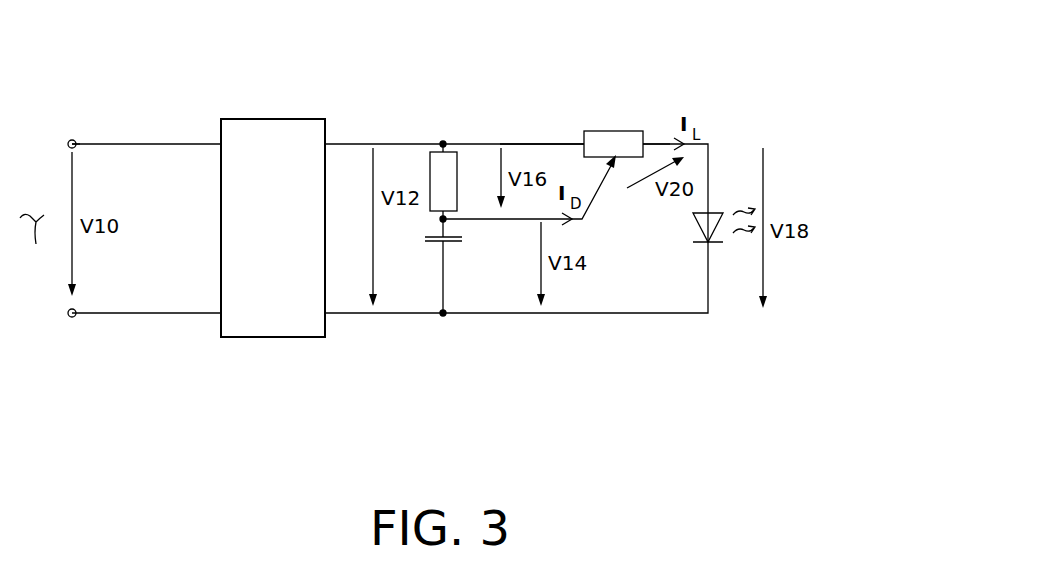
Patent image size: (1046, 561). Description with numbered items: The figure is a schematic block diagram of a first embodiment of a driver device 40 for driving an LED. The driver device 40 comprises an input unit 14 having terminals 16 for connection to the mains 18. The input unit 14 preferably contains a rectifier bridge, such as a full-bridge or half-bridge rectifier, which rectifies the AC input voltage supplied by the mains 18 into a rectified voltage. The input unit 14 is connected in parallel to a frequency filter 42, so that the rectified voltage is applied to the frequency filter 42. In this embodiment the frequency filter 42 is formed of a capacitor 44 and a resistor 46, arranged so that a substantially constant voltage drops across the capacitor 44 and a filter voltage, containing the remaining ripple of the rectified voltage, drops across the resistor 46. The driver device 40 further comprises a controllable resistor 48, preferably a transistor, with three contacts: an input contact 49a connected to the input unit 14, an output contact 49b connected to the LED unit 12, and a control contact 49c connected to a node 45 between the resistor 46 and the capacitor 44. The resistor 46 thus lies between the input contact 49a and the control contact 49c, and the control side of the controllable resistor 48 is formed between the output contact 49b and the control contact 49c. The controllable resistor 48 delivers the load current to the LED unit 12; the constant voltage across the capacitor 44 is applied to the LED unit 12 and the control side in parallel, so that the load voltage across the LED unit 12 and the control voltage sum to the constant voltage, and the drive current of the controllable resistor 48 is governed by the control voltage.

The driver device 40 is at (782, 40).
The LED unit 12 is at (796, 184).
The input unit 14 is at (289, 356).
The terminals 16 is at (73, 139).
The mains 18 is at (35, 246).
The frequency filter 42 is at (434, 126).
The capacitor 44 is at (453, 244).
The node 45 is at (441, 221).
The resistor 46 is at (458, 176).
The controllable resistor 48 is at (614, 130).
The input contact 49a is at (538, 140).
The output contact 49b is at (653, 140).
The control contact 49c is at (598, 202).